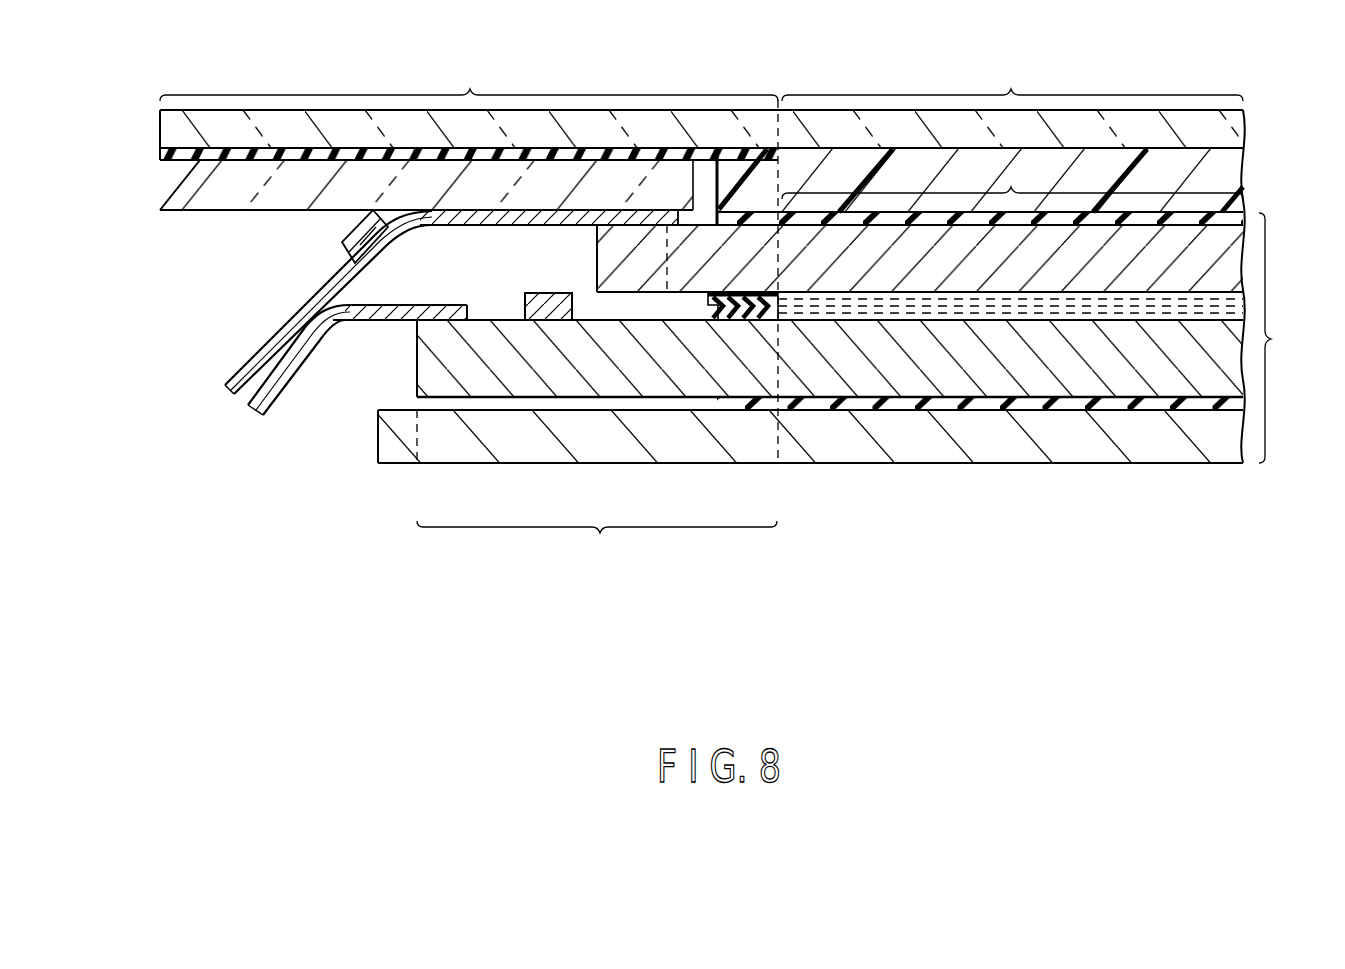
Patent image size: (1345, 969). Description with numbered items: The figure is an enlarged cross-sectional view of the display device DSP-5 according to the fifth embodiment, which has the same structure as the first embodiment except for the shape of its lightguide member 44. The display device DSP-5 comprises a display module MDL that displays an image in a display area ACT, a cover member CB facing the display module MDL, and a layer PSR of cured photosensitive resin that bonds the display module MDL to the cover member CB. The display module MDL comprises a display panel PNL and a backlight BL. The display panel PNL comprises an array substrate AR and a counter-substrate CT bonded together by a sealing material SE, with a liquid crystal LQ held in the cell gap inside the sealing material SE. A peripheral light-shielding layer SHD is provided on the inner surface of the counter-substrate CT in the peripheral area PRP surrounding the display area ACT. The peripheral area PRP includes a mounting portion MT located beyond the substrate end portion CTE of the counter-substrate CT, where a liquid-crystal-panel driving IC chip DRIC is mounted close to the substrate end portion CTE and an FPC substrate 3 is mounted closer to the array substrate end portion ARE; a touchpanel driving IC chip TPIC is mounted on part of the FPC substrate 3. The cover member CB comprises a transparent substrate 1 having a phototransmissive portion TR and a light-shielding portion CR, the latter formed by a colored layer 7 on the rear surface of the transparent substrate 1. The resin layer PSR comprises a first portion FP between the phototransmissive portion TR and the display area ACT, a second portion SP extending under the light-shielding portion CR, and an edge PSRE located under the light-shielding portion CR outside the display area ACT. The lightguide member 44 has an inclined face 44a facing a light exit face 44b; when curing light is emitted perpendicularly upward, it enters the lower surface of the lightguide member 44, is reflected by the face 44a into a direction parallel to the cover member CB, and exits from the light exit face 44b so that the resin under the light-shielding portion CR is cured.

The cover member CB is at (146, 126).
The colored layer 7 is at (257, 157).
The inclined face (reflective face) 44a is at (166, 186).
The lightguide member 44 is at (212, 212).
The light exit face 44b is at (708, 172).
The second portion SP is at (747, 190).
The edge PSRE is at (712, 190).
The first portion FP is at (850, 172).
The layer of cured photosensitive resin PSR is at (937, 206).
The display area (active area) ACT is at (1012, 177).
The counter-substrate CT is at (887, 276).
The substrate end portion CTE is at (596, 276).
The peripheral light-shielding layer SHD is at (735, 300).
The sealing material SE is at (750, 300).
The liquid crystal LQ is at (845, 308).
The array substrate AR is at (802, 378).
The array substrate end portion ARE is at (400, 352).
The display panel PNL is at (400, 403).
The backlight BL is at (1211, 455).
The display device DSP-5 is at (655, 602).
The transparent substrate 1 is at (1236, 130).
The liquid-crystal-panel driving IC chip DRIC is at (548, 293).
The mounting portion MT is at (514, 291).
The FPC substrate 3 is at (297, 322).
The touchpanel driving IC chip TPIC is at (349, 244).
The light-shielding portion CR is at (469, 80).
The phototransmissive portion TR is at (1012, 80).
The display module MDL is at (1292, 338).
The peripheral area PRP is at (597, 547).